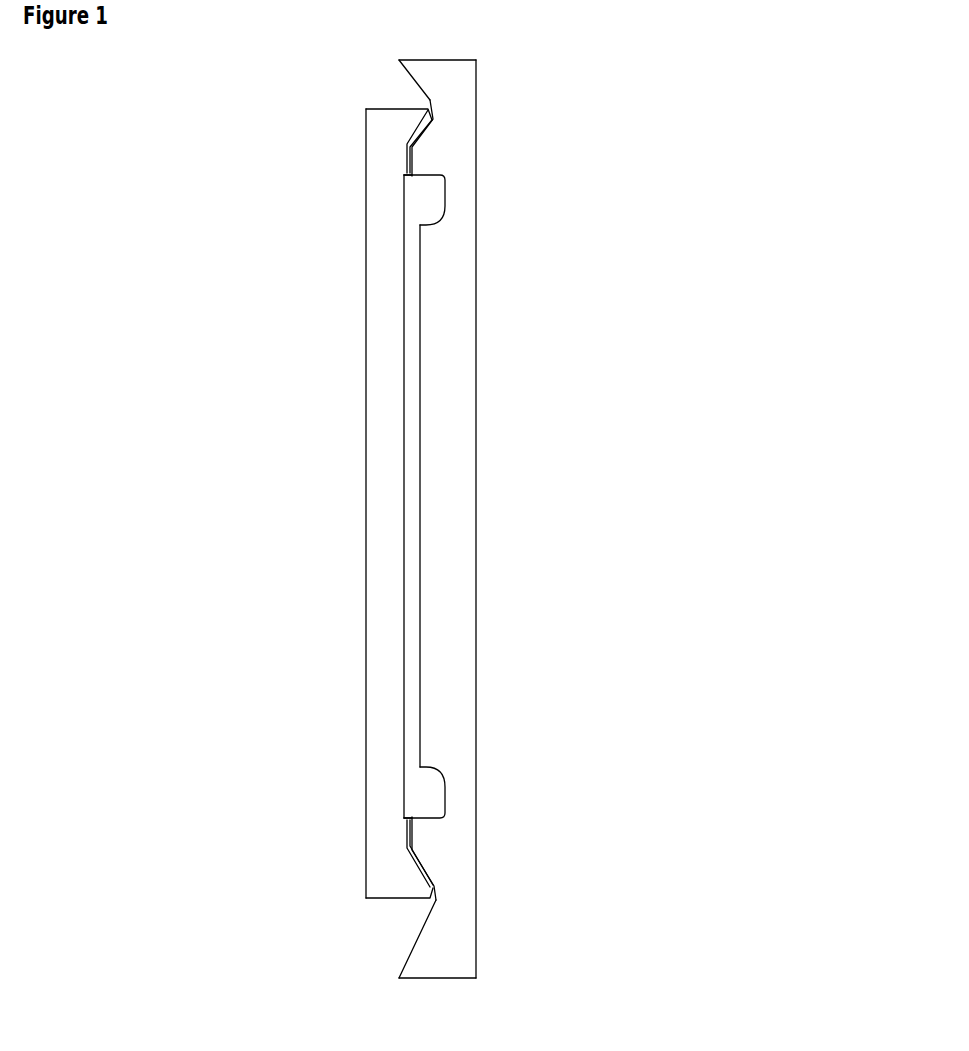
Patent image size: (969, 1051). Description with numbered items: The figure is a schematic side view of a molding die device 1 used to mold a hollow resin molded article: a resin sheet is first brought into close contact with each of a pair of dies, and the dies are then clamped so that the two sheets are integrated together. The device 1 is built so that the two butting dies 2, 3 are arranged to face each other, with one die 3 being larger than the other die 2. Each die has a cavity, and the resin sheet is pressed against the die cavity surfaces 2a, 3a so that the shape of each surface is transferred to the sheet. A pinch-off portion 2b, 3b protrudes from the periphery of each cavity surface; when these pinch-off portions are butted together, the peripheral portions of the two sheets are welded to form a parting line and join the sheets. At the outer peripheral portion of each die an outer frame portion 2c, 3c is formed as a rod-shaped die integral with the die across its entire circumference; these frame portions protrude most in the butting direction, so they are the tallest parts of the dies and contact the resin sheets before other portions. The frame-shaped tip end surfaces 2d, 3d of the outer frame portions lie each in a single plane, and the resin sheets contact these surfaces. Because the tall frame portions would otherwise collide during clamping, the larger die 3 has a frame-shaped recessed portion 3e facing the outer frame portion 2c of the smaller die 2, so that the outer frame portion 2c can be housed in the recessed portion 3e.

The molding die device 1 is at (495, 66).
The die 2 is at (366, 345).
The die cavity surface 2a is at (405, 533).
The pinch-off portion 2b is at (408, 173).
The outer frame portion 2c is at (425, 113).
The tip end surface 2d is at (407, 138).
The die 3 is at (476, 373).
The die cavity surface 3a is at (421, 508).
The pinch-off portion 3b is at (417, 173).
The outer frame portion 3c is at (418, 65).
The tip end surface 3d is at (400, 61).
The recessed portion 3e is at (432, 100).